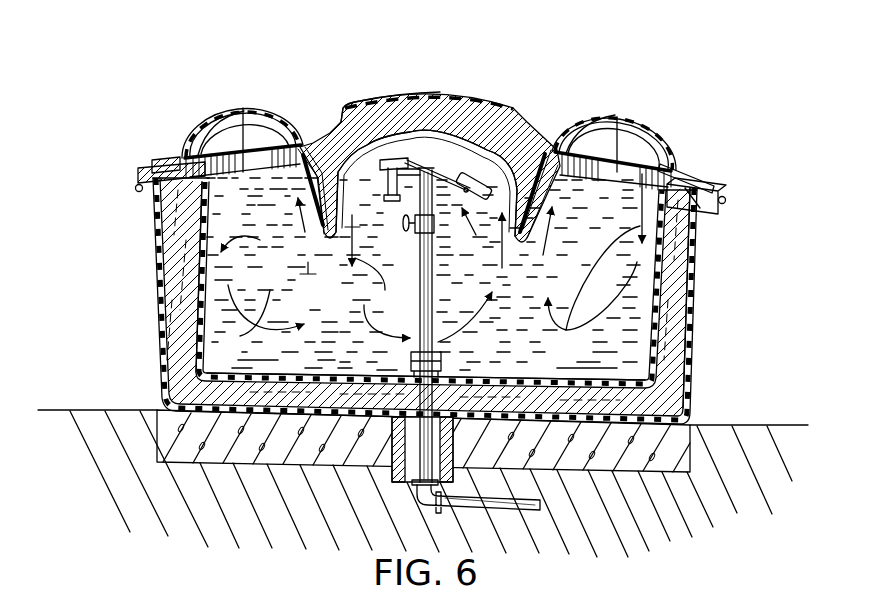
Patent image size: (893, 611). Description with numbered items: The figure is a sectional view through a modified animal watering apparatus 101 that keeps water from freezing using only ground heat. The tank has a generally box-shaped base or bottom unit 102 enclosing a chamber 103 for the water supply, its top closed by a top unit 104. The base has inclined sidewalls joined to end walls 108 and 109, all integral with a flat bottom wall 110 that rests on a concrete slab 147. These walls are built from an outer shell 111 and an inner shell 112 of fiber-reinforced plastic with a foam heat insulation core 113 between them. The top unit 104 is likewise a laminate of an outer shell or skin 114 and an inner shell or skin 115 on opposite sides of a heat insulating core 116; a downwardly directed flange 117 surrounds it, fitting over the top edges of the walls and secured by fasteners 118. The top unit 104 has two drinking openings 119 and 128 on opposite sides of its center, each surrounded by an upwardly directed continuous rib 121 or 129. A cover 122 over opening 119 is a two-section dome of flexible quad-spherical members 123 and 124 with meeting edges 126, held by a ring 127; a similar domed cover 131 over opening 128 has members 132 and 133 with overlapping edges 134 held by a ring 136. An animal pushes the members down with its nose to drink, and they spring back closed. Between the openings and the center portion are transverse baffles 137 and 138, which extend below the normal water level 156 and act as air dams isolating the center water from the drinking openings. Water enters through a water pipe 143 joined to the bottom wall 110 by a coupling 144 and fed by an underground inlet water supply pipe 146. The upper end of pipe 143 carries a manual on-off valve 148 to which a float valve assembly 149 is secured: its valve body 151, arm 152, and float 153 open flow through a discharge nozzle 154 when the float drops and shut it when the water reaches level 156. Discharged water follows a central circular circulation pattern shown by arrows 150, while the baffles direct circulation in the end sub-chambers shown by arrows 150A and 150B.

The inner tank 101 is at (148, 287).
The base or bottom unit 102 is at (692, 372).
The chamber 103 is at (423, 274).
The top unit 104 is at (481, 94).
The end wall 108 is at (165, 330).
The end wall 109 is at (690, 328).
The bottom wall 110 is at (541, 376).
The outer shell 111 is at (165, 363).
The inner shell 112 is at (211, 340).
The heat insulation core 113 is at (185, 368).
The outer shell or skin 114 is at (420, 100).
The inner shell or skin 115 is at (512, 118).
The heat insulating core 116 is at (365, 120).
The flange 117 is at (146, 172).
The fasteners 118 is at (136, 188).
The drinking opening or hole 119 is at (242, 179).
The rib 121 is at (305, 148).
The cover 122 is at (206, 118).
The quad-spherical member 123 is at (190, 142).
The quad-spherical member 124 is at (254, 106).
The overlapping or meeting edges 126 is at (238, 108).
The ring 127 is at (160, 158).
The drinking opening 128 is at (613, 176).
The rib 129 is at (668, 168).
The domed cover 131 is at (616, 104).
The quad-spherical member 132 is at (657, 128).
The quad-spherical member 133 is at (596, 111).
The overlapping edges 134 is at (622, 117).
The ring 136 is at (692, 174).
The baffle 137 is at (323, 240).
The baffle 138 is at (559, 240).
The water pipe 143 is at (434, 297).
The coupling 144 is at (438, 355).
The inlet water supply pipe 146 is at (496, 508).
The concrete slab 147 is at (634, 455).
The on-off valve 148 is at (418, 234).
The float valve assembly 149 is at (470, 275).
The arrows 150 is at (382, 298).
The arrows 150A is at (266, 303).
The arrows 150B is at (595, 252).
The valve body 151 is at (387, 160).
The arm 152 is at (443, 180).
The float 153 is at (486, 176).
The discharge nozzle 154 is at (390, 180).
The water level 156 is at (263, 225).